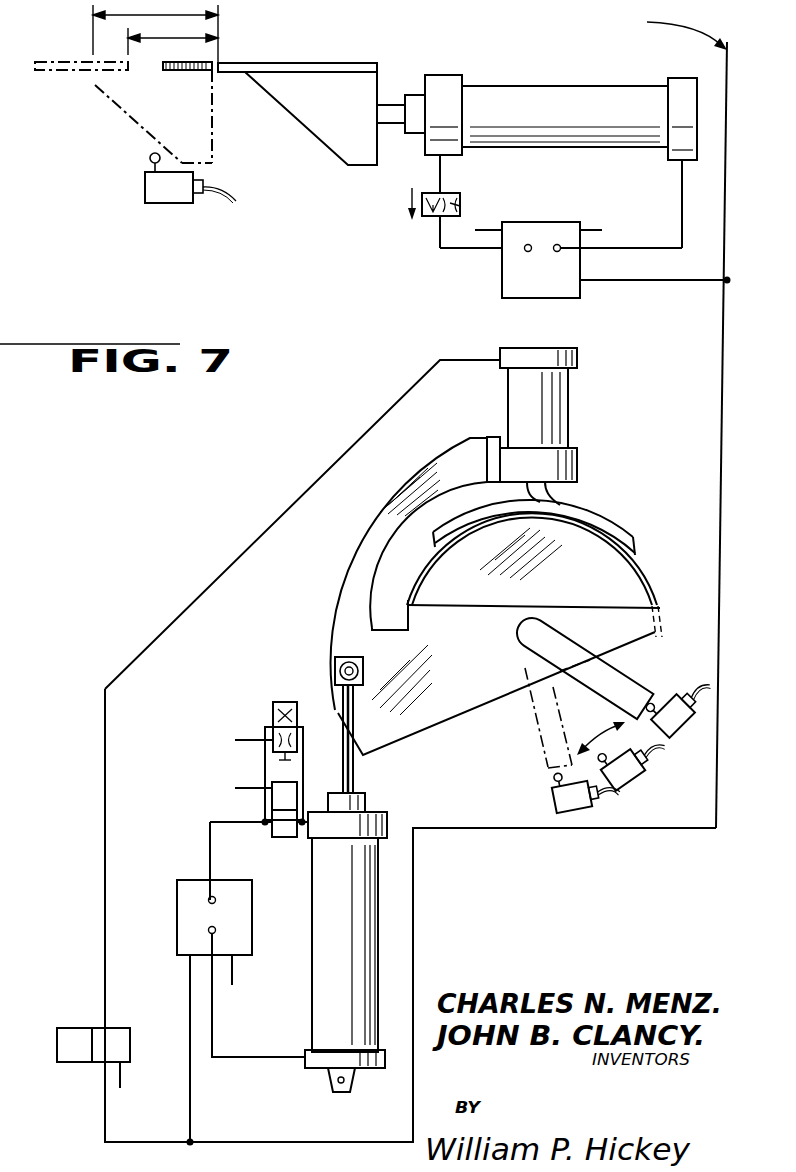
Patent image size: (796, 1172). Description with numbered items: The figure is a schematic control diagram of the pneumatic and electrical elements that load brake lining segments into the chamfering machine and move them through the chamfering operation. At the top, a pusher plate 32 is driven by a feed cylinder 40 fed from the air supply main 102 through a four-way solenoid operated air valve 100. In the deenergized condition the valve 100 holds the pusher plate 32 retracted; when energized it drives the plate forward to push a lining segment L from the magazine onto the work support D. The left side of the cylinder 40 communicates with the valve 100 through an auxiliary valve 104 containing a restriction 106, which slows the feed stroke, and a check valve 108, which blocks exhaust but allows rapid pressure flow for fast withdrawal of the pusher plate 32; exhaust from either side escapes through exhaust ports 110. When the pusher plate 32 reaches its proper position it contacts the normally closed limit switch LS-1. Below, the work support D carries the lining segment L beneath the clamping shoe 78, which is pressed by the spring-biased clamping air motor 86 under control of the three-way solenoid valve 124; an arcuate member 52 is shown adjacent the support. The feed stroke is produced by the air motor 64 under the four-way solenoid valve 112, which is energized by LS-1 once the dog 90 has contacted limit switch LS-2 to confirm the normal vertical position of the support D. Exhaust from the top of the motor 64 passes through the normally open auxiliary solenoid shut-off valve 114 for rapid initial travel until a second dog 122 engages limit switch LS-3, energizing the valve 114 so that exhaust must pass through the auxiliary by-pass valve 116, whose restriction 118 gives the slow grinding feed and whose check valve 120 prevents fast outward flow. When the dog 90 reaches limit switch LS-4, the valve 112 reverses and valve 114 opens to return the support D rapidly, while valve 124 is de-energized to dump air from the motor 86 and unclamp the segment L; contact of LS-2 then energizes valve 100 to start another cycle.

The pusher plate 32 is at (293, 68).
The feed cylinder 40 is at (582, 95).
The air supply line 102 is at (727, 64).
The auxiliary valve 104 is at (464, 190).
The restriction 106 is at (460, 206).
The check valve 108 is at (425, 213).
The exhaust ports 110 is at (602, 230).
The four-way solenoid operated air valve 100 is at (533, 290).
The clamping air motor 86 is at (517, 393).
The clamping shoe 78 is at (573, 503).
The arcuate arm 52 is at (360, 556).
The lining segment L is at (640, 567).
The work support D is at (470, 652).
The dog 90 is at (612, 677).
The dog 122 is at (553, 738).
The check valve 120 is at (287, 715).
The auxiliary by-pass valve 116 is at (266, 708).
The restriction 118 is at (278, 737).
The auxiliary solenoid shut-off valve 114 is at (265, 803).
The four-way solenoid valve 112 is at (193, 880).
The air motor 64 is at (320, 905).
The three-way solenoid valve 124 is at (75, 1030).
The limit switch LS-1 is at (190, 178).
The limit switch LS-2 is at (700, 727).
The limit switch LS-3 is at (627, 778).
The limit switch LS-4 is at (553, 798).